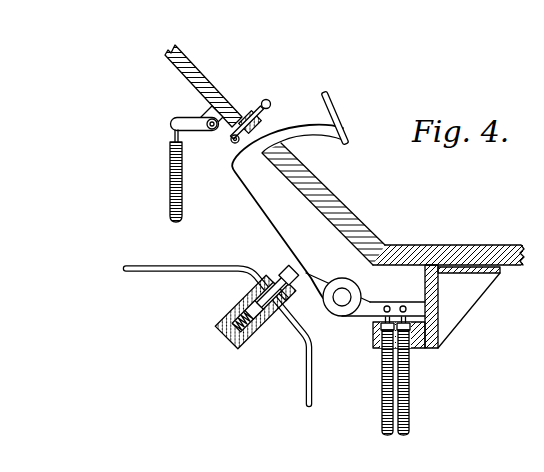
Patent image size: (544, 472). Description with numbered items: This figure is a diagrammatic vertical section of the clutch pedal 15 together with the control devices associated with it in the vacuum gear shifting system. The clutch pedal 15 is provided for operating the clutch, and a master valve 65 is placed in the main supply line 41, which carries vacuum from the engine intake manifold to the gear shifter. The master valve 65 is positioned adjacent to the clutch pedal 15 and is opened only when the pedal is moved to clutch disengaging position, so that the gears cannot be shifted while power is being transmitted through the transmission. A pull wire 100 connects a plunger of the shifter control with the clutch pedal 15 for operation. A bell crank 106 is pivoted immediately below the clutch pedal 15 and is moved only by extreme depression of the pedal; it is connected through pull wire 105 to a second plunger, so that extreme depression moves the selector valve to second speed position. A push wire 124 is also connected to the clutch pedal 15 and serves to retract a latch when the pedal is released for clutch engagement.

The clutch pedal 15 is at (333, 103).
The main supply line 41 is at (152, 272).
The master valve 65 is at (238, 312).
The pull wire 100 is at (382, 323).
The pull wire 105 is at (175, 134).
The bell crank 106 is at (188, 121).
The push wire 124 is at (410, 324).